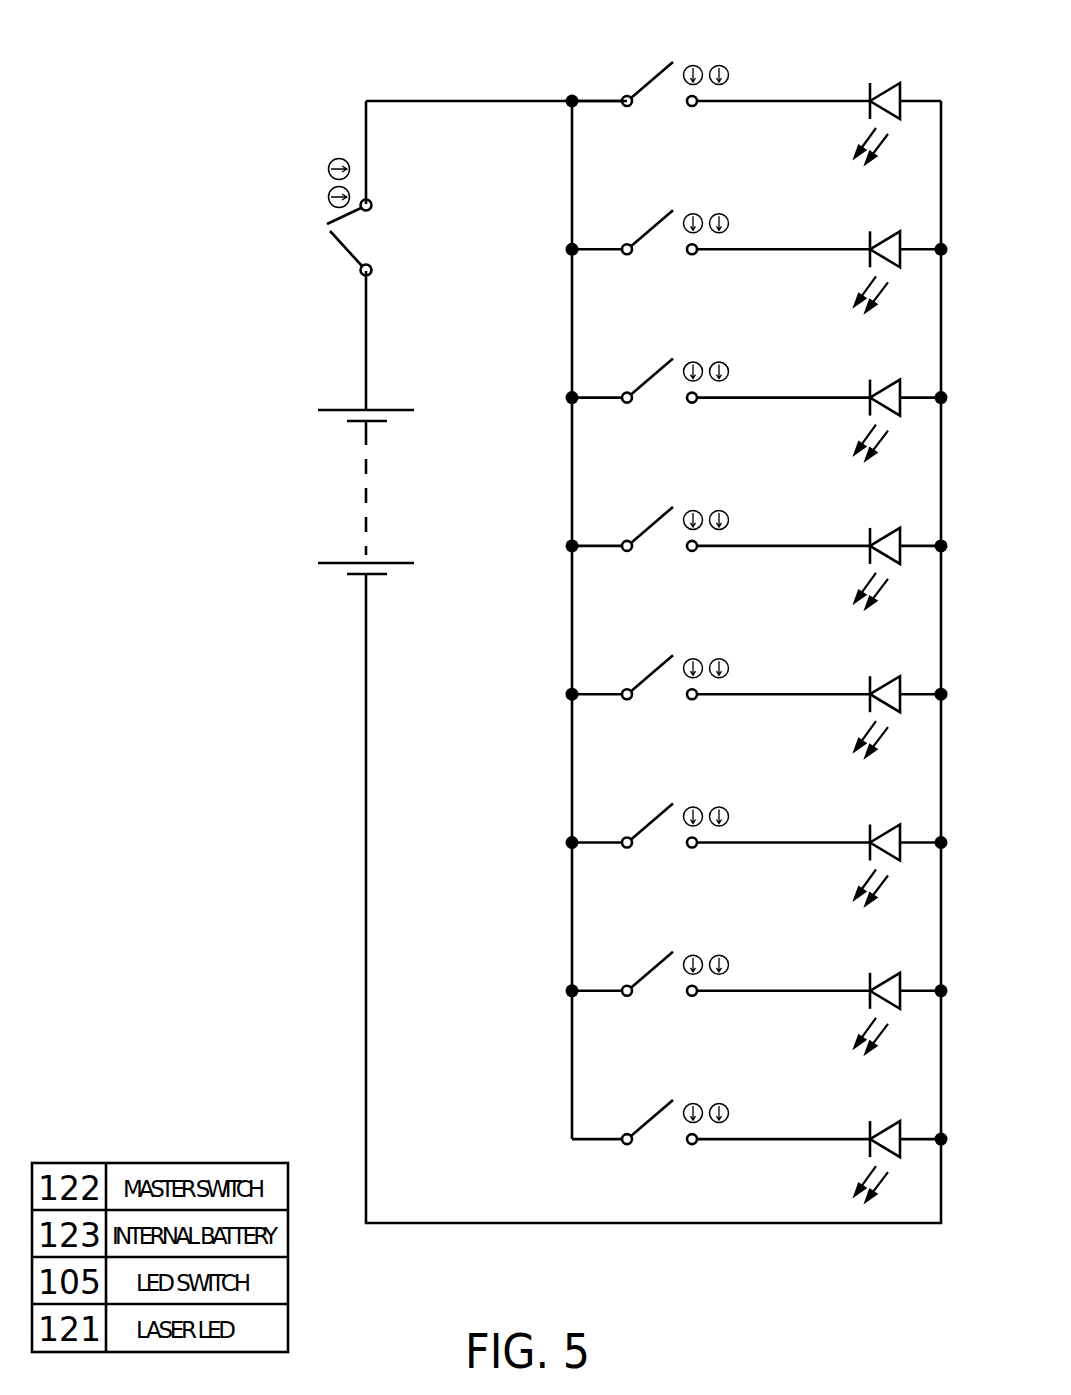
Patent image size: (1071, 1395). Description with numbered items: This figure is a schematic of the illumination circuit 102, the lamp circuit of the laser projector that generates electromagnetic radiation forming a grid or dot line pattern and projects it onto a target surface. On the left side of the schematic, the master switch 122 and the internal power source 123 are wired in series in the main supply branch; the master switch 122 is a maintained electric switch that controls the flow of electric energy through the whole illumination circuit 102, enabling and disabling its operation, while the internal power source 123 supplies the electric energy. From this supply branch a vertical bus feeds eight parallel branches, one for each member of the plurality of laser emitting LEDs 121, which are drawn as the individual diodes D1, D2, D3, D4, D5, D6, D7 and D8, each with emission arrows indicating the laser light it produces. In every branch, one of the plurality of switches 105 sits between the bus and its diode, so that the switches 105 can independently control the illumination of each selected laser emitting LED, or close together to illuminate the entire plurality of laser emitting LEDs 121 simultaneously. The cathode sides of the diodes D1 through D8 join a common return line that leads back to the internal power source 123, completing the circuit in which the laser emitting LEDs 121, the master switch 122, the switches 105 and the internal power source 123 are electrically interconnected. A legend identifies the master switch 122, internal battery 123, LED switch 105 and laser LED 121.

The illumination circuit 102 is at (205, 158).
The master switch 122 is at (327, 224).
The internal power source 123 is at (335, 420).
The plurality of switches 105 is at (650, 1003).
The plurality of laser emitting LEDs 121 is at (861, 670).
The laser LED D1 is at (898, 106).
The laser LED D2 is at (898, 254).
The laser LED D3 is at (898, 403).
The laser LED D4 is at (898, 551).
The laser LED D5 is at (898, 699).
The laser LED D6 is at (898, 848).
The laser LED D7 is at (898, 996).
The laser LED D8 is at (898, 1144).